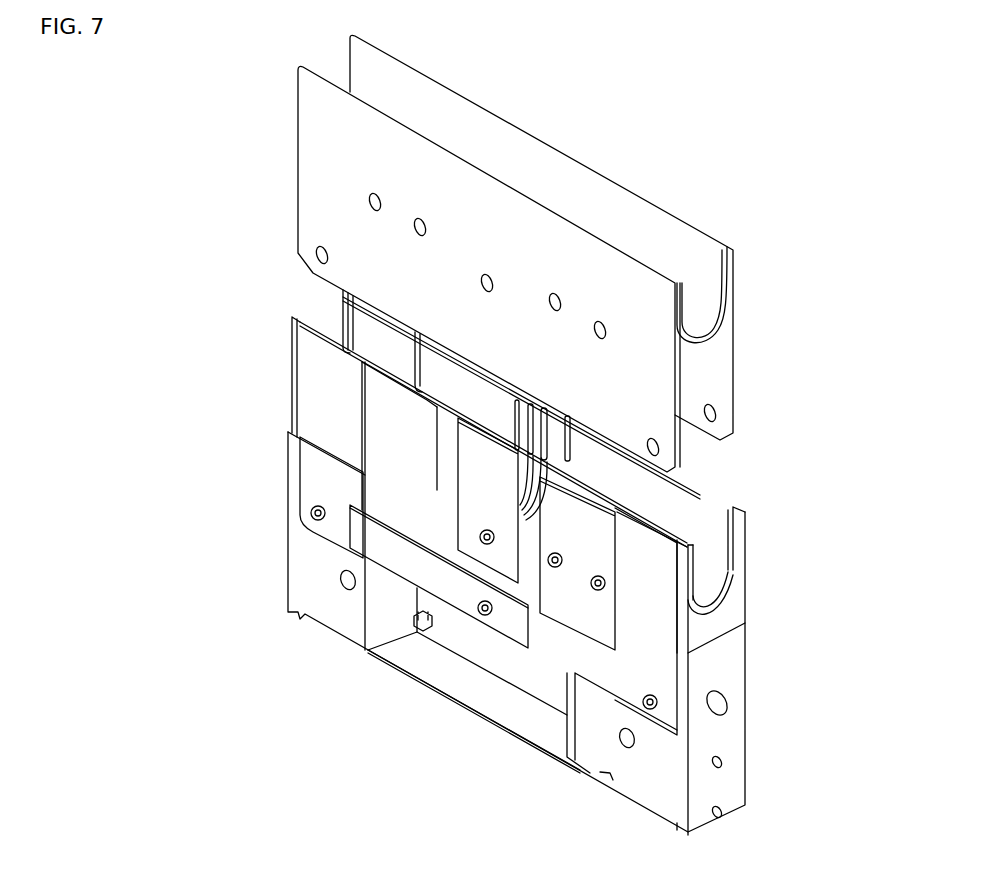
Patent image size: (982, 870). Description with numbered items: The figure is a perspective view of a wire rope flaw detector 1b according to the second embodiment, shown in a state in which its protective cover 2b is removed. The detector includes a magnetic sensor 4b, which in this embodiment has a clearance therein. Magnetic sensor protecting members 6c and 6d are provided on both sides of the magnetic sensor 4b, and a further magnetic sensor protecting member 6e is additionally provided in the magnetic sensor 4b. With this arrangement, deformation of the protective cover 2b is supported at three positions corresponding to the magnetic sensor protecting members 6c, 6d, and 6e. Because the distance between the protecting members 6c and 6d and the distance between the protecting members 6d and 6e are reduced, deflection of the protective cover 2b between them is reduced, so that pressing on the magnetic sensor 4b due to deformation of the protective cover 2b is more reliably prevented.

The wire rope flaw detector 1b is at (627, 158).
The protective cover 2b is at (682, 260).
The magnetic sensor 4b is at (545, 450).
The magnetic sensor protecting member 6c is at (550, 410).
The magnetic sensor protecting member 6d is at (515, 410).
The magnetic sensor protecting member 6e is at (540, 477).